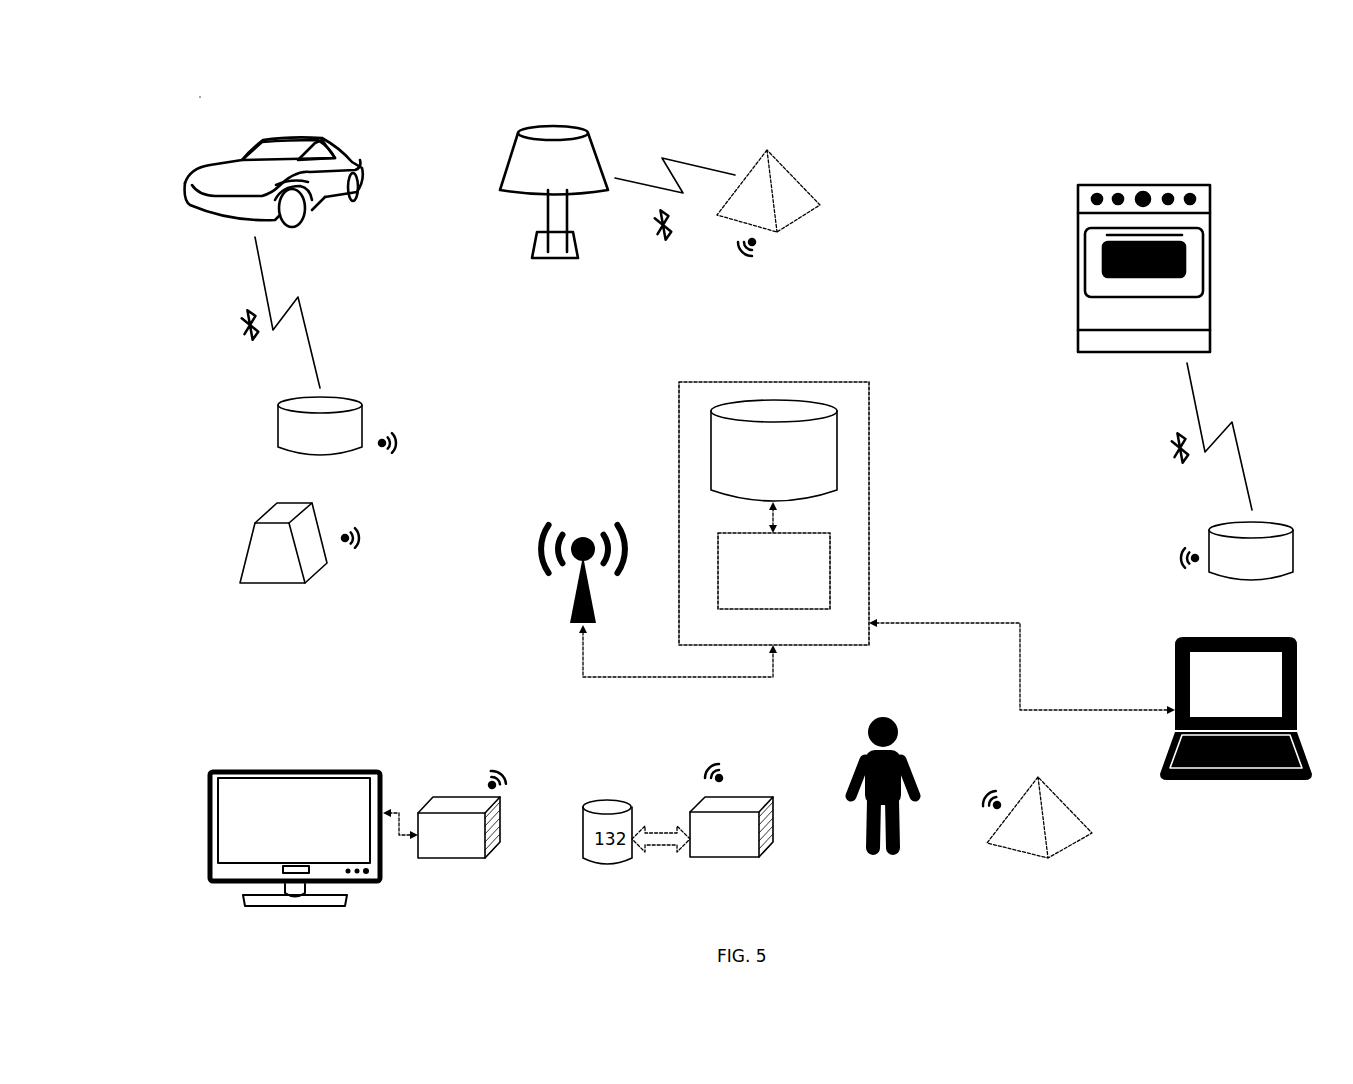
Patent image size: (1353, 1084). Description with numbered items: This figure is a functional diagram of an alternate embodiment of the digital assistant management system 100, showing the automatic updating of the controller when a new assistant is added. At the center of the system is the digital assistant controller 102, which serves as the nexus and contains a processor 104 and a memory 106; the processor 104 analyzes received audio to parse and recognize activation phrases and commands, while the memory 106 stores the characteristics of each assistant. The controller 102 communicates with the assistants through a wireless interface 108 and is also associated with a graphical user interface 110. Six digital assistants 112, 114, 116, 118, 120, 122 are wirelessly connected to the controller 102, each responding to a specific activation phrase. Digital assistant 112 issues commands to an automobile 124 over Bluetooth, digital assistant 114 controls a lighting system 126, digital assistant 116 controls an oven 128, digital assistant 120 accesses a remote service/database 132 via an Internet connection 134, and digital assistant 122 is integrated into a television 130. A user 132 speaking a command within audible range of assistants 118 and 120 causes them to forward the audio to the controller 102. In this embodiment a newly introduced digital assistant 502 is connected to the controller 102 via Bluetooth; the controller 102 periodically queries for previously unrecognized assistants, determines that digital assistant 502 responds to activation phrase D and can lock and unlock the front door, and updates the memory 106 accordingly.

The digital assistant management system 100 is at (200, 97).
The digital assistant controller (DAC) 102 is at (690, 415).
The processor 104 is at (774, 571).
The memory 106 is at (774, 450).
The wireless interface 108 is at (562, 605).
The graphical user interface 110 is at (1257, 783).
The digital assistant 112 is at (337, 426).
The digital assistant 114 is at (768, 204).
The digital assistant 116 is at (1237, 551).
The digital assistant 118 is at (1036, 817).
The digital assistant 120 is at (731, 809).
The digital assistant 122 is at (463, 813).
The automobile 124 is at (320, 205).
The lighting system 126 is at (492, 178).
The oven 128 is at (1213, 302).
The television 130 is at (277, 770).
The user / remote service database 132 is at (885, 712).
The Internet connection 134 is at (660, 832).
The digital assistant 502 is at (299, 543).